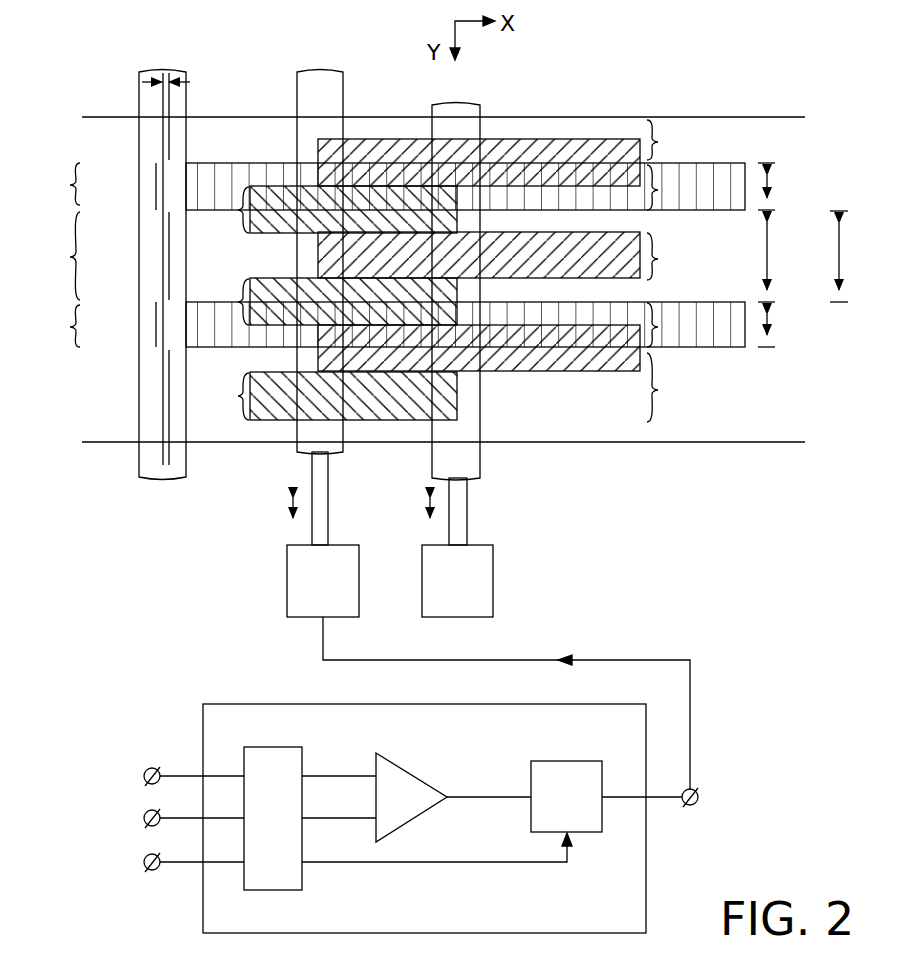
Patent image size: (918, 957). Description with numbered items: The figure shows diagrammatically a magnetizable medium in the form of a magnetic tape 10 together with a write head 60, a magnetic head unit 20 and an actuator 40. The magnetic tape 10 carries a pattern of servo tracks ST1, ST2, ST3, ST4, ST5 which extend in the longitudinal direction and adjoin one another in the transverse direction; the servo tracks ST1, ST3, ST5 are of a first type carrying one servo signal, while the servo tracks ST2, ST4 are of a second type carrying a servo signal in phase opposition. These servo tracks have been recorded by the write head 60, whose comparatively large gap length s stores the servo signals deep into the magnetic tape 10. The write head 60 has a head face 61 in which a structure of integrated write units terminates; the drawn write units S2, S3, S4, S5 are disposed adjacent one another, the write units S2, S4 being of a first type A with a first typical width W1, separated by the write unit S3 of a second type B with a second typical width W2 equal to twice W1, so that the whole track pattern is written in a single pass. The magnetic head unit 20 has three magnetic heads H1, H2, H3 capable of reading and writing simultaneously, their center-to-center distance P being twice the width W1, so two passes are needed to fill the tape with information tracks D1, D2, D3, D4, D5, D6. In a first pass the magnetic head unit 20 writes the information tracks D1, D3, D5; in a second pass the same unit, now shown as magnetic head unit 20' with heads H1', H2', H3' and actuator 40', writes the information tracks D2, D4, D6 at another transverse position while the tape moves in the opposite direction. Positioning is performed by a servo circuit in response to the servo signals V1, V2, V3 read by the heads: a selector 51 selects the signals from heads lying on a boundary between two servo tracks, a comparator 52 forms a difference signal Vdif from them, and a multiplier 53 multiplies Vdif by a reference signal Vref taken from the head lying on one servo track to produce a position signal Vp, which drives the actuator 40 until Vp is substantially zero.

The magnetic tape 10 is at (765, 117).
The magnetic head unit 20 is at (320, 241).
The magnetic head unit in second pass 20' is at (437, 279).
The actuator 40 is at (294, 534).
The actuator in second pass 40' is at (494, 547).
The selector 51 is at (272, 747).
The comparator 52 is at (413, 770).
The multiplier 53 is at (563, 758).
The write head 60 is at (160, 68).
The head face 61 is at (138, 97).
The information track D1 is at (520, 152).
The information track D2 is at (238, 222).
The information track D3 is at (570, 270).
The information track D4 is at (238, 296).
The information track D5 is at (520, 347).
The information track D6 is at (238, 400).
The magnetic head H1 is at (275, 113).
The magnetic head in second pass H1' is at (488, 147).
The magnetic head H2 is at (274, 258).
The magnetic head in second pass H2' is at (491, 267).
The magnetic head H3 is at (280, 422).
The magnetic head in second pass H3' is at (513, 440).
The servo track ST1 is at (658, 142).
The servo track ST2 is at (658, 190).
The servo track ST3 is at (658, 259).
The servo track ST4 is at (658, 327).
The servo track ST5 is at (658, 406).
The write unit S2 is at (156, 180).
The write unit S3 is at (163, 250).
The write unit S4 is at (156, 323).
The write unit S5 is at (163, 395).
The first typical width W1 is at (768, 186).
The second typical width W2 is at (768, 258).
The center-to-center distance P is at (840, 251).
The first type of write unit A is at (70, 189).
The second type of write unit B is at (70, 262).
The gap length s is at (174, 82).
The servo signal V1 is at (143, 776).
The servo signal V2 is at (143, 862).
The servo signal V3 is at (143, 818).
The difference signal Vdif is at (485, 795).
The reference signal Vref is at (448, 865).
The position signal Vp is at (698, 797).